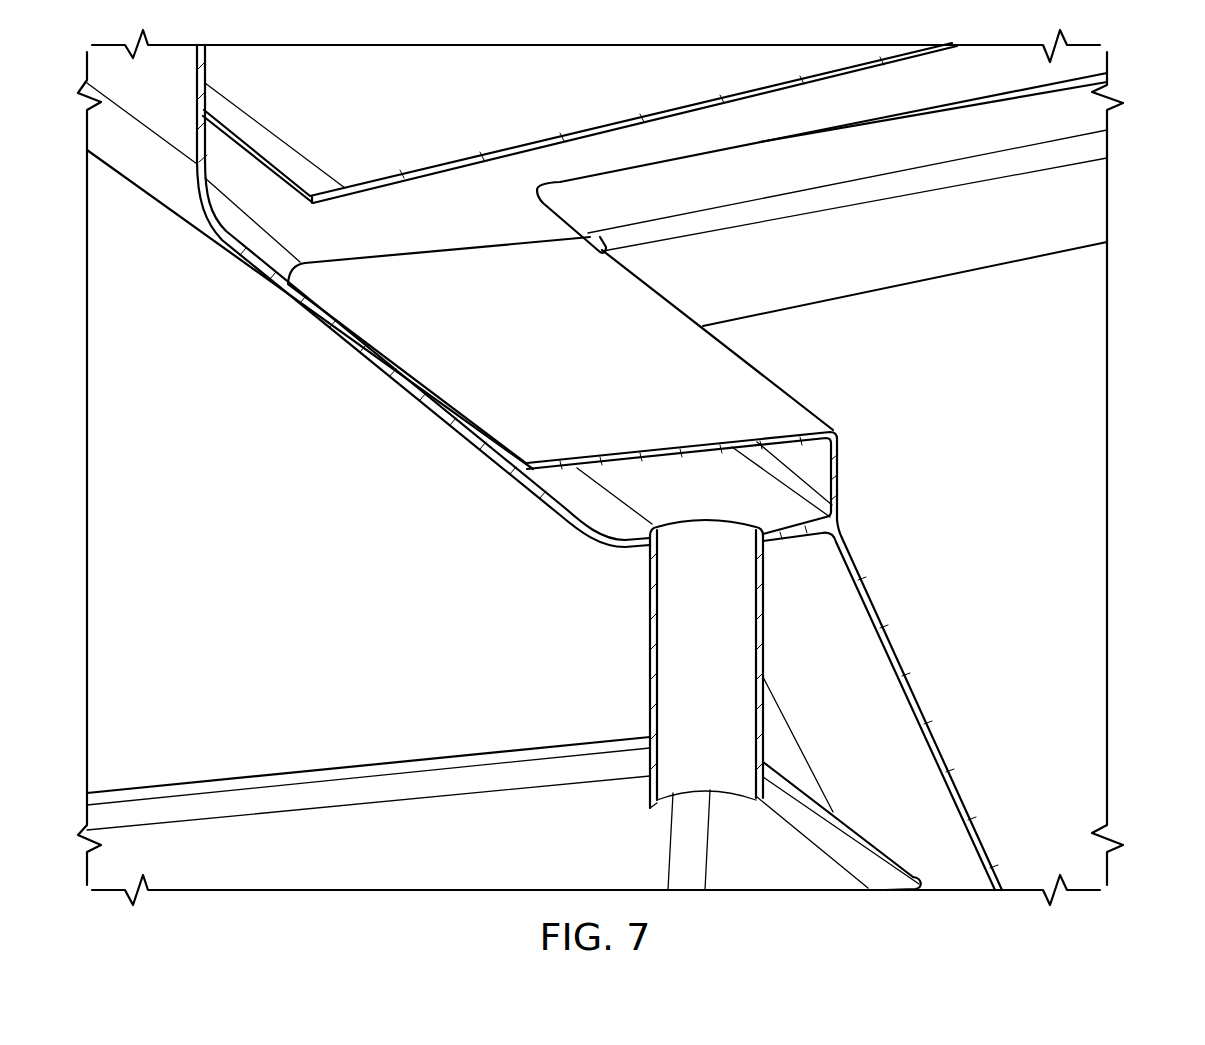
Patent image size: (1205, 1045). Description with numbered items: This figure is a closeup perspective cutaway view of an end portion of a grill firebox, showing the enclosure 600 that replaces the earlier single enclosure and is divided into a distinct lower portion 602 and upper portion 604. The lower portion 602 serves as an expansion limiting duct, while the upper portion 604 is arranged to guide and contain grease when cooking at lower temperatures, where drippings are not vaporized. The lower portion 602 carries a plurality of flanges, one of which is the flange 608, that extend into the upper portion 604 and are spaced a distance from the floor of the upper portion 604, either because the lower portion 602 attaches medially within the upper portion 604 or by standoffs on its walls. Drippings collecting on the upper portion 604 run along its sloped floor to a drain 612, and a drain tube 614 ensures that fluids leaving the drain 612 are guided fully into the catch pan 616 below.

The enclosure 600 is at (911, 686).
The lower portion 602 is at (1085, 392).
The upper portion 604 is at (142, 170).
The flange 608 is at (613, 190).
The drain 612 is at (706, 520).
The drain tube 614 is at (650, 664).
The catch pan 616 is at (360, 835).